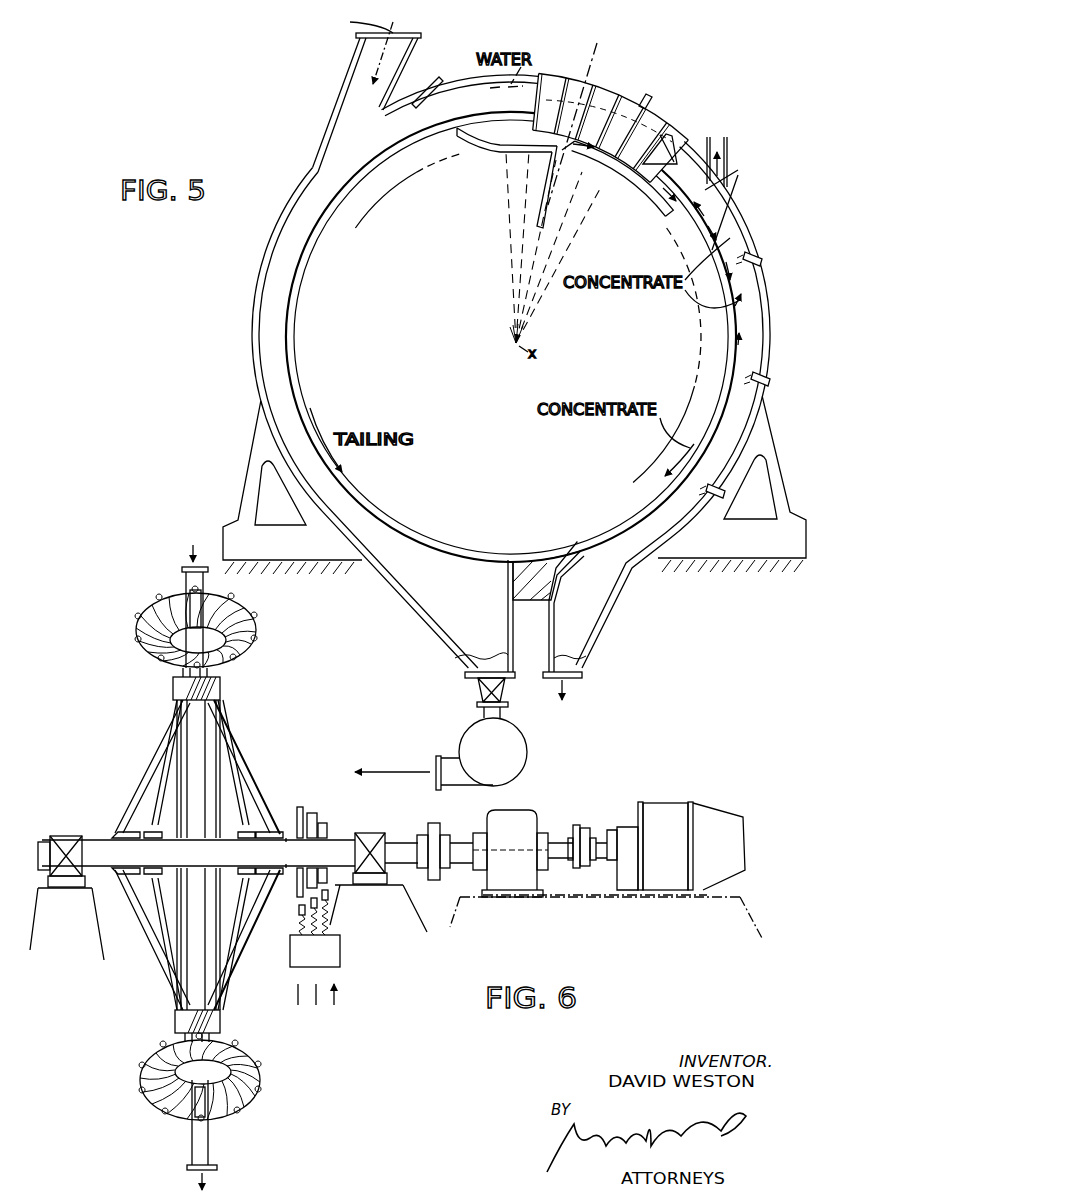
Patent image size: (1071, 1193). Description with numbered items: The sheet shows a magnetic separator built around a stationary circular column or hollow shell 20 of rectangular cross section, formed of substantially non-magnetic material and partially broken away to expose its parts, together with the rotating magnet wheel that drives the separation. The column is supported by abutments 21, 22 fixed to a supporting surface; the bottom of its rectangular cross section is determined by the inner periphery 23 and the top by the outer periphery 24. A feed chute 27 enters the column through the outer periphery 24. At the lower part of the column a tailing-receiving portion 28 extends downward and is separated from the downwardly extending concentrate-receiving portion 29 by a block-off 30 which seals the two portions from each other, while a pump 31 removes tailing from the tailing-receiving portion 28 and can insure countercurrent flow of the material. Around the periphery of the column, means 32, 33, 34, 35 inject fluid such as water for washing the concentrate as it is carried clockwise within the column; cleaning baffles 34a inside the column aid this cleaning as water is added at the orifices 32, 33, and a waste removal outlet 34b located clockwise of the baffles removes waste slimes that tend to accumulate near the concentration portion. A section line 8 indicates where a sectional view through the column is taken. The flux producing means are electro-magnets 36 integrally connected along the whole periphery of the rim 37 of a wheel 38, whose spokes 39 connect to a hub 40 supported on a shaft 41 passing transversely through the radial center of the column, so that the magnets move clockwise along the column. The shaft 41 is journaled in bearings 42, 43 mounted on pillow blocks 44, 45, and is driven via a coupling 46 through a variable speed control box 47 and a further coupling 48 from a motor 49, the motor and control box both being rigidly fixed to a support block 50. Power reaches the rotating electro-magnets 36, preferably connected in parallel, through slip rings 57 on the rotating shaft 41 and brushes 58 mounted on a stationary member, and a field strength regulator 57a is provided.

In FIG. 5, the section line 8— 8 is at (586, 50).
In FIG. 5, the hollow shell 20 is at (273, 325).
In FIG. 5, the abutment 21 is at (250, 470).
In FIG. 5, the abutment 22 is at (776, 466).
In FIG. 5, the inner periphery 23 is at (296, 357).
In FIG. 5, the outer periphery 24 is at (292, 200).
In FIG. 5, the feed chute 27 is at (352, 77).
In FIG. 5, the tailing-receiving portion 28 is at (430, 606).
In FIG. 5, the concentrate-receiving portion 29 is at (598, 621).
In FIG. 5, the block-off 30 is at (541, 571).
In FIG. 5, the pump 31 is at (527, 745).
In FIG. 5, the fluid injecting orifice 32 is at (714, 500).
In FIG. 5, the fluid injecting orifice 33 is at (765, 272).
In FIG. 5, the fluid injecting means 34 is at (649, 94).
In FIG. 5, the cleaning baffle 34a is at (660, 148).
In FIG. 5, the waste removal outlet 34b is at (727, 149).
In FIG. 5, the fluid injecting means 35 is at (437, 77).
In FIG. 5, the electro-magnet 36 is at (587, 92).
In FIG. 6, the electro-magnet 36 is at (165, 600).
In FIG. 5, the rim 37 is at (488, 142).
In FIG. 6, the rim 37 is at (172, 684).
In FIG. 5, the wheel 38 is at (523, 183).
In FIG. 6, the wheel 38 is at (252, 752).
In FIG. 5, the spoke 39 is at (560, 196).
In FIG. 6, the spoke 39 is at (158, 760).
In FIG. 6, the hub 40 is at (290, 838).
In FIG. 6, the shaft 41 is at (95, 840).
In FIG. 6, the bearing 42 is at (60, 836).
In FIG. 6, the bearing 43 is at (370, 833).
In FIG. 6, the pillow block 44 is at (94, 922).
In FIG. 6, the pillow block 45 is at (408, 898).
In FIG. 6, the coupling 46 is at (433, 833).
In FIG. 6, the variable speed control box 47 is at (520, 820).
In FIG. 6, the coupling 48 is at (580, 825).
In FIG. 6, the motor 49 is at (667, 810).
In FIG. 6, the support block 50 is at (737, 897).
In FIG. 6, the slip rings 57 is at (297, 906).
In FIG. 6, the field strength regulator 57a is at (320, 982).
In FIG. 6, the brushes 58 is at (300, 944).